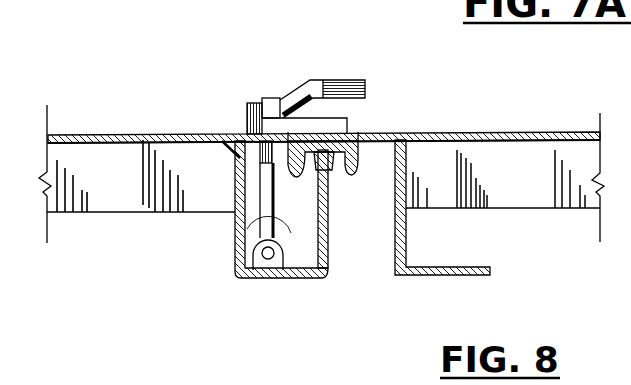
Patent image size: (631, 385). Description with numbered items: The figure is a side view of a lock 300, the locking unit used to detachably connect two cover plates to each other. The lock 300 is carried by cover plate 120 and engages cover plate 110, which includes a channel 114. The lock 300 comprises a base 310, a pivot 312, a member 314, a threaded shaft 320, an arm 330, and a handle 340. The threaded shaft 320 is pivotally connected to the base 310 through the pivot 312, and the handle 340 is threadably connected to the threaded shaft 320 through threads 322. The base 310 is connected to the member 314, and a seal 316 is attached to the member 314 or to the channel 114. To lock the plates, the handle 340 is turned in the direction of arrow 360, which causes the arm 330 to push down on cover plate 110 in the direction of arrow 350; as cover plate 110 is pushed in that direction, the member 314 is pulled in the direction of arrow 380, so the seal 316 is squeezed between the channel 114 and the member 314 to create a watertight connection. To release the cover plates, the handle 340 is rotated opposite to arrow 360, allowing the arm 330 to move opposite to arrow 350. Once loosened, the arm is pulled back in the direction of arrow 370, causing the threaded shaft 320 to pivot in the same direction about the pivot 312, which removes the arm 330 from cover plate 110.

The cover plate 110 is at (518, 132).
The channel 114 is at (358, 148).
The cover plate 120 is at (110, 134).
The lock 300 is at (222, 36).
The base 310 is at (277, 279).
The pivot 312 is at (264, 256).
The member 314 is at (331, 228).
The seal 316 is at (333, 172).
The threaded shaft 320 is at (262, 208).
The threads 322 is at (262, 151).
The arm 330 is at (347, 120).
The handle 340 is at (340, 80).
The arrow 350 is at (391, 90).
The arrow 360 is at (283, 80).
The arrow 370 is at (228, 250).
The arrow 380 is at (334, 290).